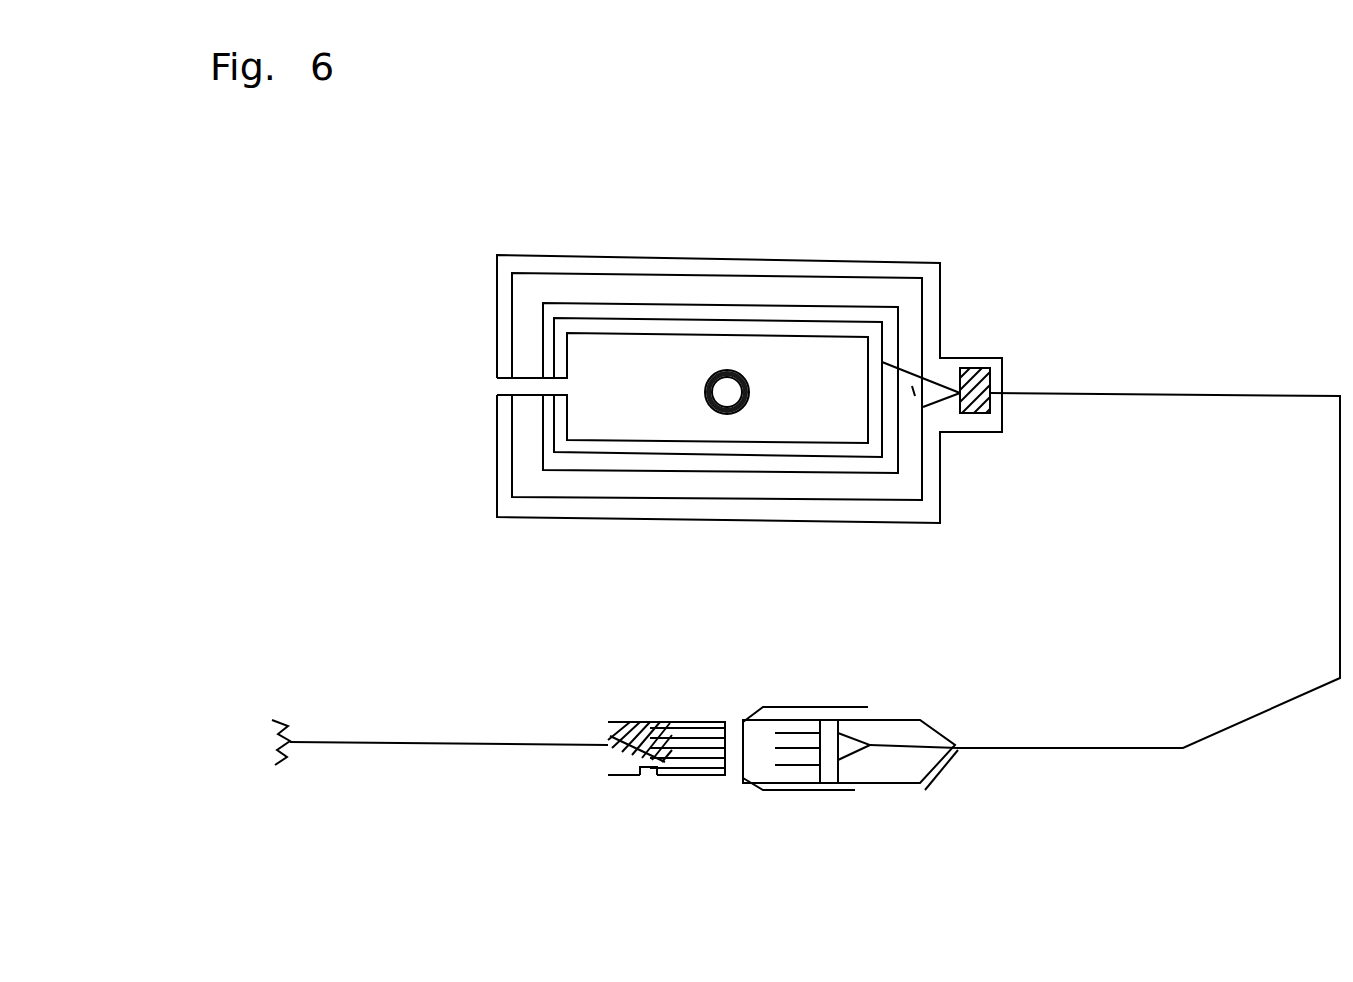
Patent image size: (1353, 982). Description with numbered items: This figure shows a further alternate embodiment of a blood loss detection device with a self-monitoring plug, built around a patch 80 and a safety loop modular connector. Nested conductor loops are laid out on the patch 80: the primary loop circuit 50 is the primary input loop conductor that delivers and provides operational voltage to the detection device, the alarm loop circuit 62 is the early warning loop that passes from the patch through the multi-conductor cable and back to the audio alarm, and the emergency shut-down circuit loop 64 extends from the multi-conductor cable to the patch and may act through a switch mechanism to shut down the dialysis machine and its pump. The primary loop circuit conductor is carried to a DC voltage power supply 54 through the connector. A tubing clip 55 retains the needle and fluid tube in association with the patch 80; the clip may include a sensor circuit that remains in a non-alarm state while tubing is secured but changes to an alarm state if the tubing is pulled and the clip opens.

The patch 80 is at (1103, 237).
The primary loop circuit 50 is at (580, 457).
The alarm loop circuit 62 is at (540, 455).
The emergency shut-down circuit loop 64 is at (873, 503).
The tubing clip 55 is at (992, 413).
The DC voltage power supply 54 is at (608, 720).